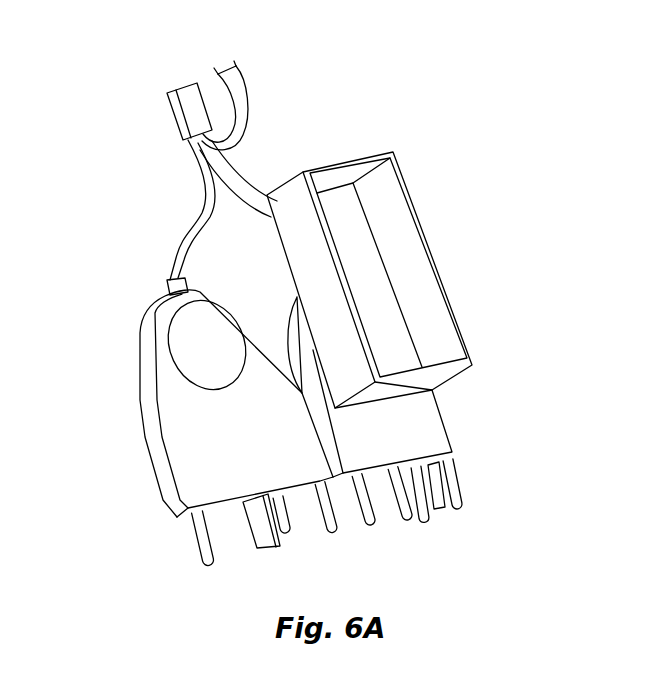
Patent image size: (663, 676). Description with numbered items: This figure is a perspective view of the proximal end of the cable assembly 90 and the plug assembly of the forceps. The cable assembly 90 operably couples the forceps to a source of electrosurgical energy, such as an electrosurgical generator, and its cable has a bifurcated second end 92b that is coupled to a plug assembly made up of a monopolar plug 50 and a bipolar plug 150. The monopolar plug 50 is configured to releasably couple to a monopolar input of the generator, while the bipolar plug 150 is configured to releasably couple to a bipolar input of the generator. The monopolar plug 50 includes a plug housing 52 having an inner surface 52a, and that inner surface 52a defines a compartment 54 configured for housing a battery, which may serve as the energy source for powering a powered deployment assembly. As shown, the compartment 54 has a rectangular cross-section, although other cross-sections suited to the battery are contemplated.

The cable assembly 90 is at (193, 196).
The bifurcated second end 92b is at (250, 197).
The plug housing 52 is at (441, 276).
The inner surface 52a is at (400, 253).
The compartment 54 is at (356, 239).
The monopolar plug 50 is at (437, 428).
The bipolar plug 150 is at (150, 478).